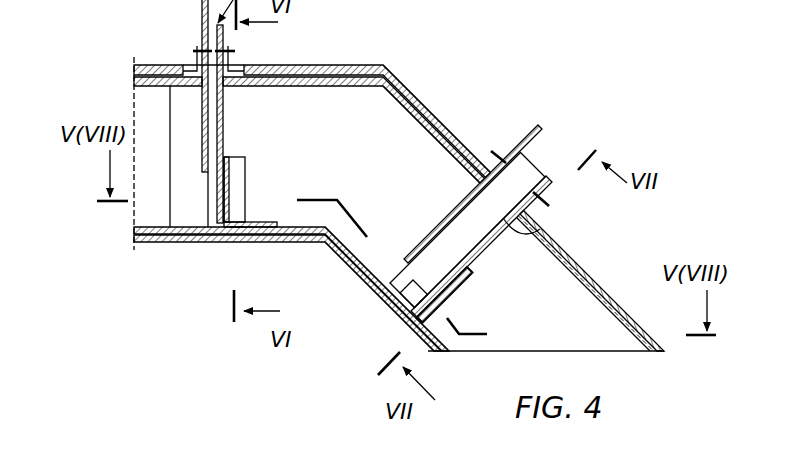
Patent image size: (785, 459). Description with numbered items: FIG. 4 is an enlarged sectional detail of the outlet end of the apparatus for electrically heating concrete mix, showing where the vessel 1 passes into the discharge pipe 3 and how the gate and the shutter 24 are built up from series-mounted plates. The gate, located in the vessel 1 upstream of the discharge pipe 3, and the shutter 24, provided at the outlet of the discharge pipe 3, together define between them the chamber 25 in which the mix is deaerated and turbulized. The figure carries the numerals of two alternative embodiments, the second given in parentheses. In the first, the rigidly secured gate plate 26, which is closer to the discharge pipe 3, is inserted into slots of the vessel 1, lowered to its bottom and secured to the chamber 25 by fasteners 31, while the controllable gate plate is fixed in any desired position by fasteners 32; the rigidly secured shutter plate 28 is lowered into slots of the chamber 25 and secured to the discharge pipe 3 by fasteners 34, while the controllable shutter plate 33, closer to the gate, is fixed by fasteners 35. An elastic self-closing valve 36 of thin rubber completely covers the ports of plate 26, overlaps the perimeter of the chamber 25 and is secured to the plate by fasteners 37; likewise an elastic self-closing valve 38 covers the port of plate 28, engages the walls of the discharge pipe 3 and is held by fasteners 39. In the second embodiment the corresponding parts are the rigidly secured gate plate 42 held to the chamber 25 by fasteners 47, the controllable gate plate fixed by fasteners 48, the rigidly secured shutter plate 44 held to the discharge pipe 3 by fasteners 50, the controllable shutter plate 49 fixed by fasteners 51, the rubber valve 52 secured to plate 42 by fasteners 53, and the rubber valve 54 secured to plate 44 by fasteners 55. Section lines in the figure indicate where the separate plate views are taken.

The vessel 1 is at (159, 243).
The discharge pipe 3 is at (595, 290).
The shutter 24 is at (540, 155).
The chamber 25 is at (405, 99).
The plate 26 is at (257, 113).
The plate 42 is at (225, 107).
The plate 28 is at (583, 281).
The plate 44 is at (541, 228).
The fasteners 31 is at (266, 50).
The fasteners 47 is at (234, 51).
The fasteners 32 is at (170, 25).
The fasteners 48 is at (196, 49).
The plate 33 is at (493, 176).
The plate 49 is at (539, 123).
The fasteners 34 is at (519, 246).
The fasteners 50 is at (549, 196).
The fasteners 35 is at (488, 140).
The fasteners 51 is at (507, 139).
The valve 36 is at (243, 252).
The valve 52 is at (236, 229).
The fasteners 37 is at (277, 192).
The fasteners 53 is at (222, 163).
The valve 38 is at (387, 289).
The valve 54 is at (409, 327).
The fasteners 39 is at (488, 292).
The fasteners 55 is at (466, 272).